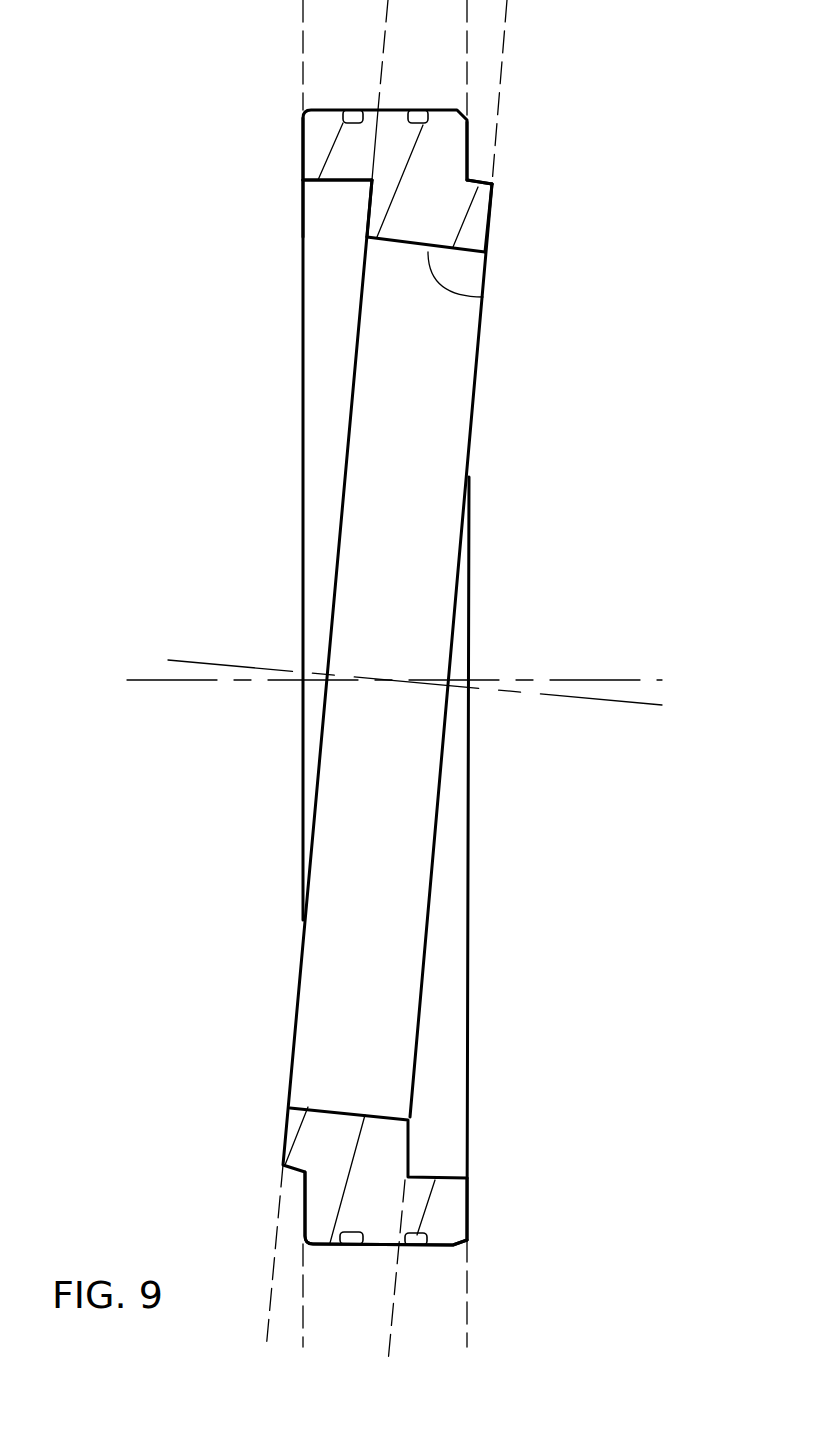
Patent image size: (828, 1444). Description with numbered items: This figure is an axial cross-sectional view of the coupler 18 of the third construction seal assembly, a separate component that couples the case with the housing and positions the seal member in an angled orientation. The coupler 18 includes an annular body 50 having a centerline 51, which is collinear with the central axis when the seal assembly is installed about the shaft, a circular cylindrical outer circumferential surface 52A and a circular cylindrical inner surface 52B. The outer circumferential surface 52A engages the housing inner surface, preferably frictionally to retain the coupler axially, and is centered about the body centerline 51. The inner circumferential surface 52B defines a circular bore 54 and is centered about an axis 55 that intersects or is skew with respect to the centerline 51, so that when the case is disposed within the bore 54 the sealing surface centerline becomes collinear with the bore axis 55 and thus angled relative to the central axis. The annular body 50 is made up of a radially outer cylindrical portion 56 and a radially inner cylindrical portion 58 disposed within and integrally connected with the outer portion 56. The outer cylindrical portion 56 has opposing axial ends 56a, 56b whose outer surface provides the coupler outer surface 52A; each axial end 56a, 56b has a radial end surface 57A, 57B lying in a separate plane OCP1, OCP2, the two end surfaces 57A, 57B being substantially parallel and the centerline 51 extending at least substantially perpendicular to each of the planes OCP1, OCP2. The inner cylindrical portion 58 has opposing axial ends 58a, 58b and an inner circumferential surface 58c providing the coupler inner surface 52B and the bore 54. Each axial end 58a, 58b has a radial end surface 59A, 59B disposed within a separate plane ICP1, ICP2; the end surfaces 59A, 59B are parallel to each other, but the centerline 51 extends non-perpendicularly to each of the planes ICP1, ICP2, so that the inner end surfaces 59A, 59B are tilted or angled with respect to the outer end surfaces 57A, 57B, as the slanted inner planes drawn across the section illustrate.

The coupler 18 is at (552, 318).
The annular body 50 is at (292, 431).
The centerline 51 is at (633, 680).
The outer circumferential surface 52A is at (358, 100).
The inner circumferential surface 52B is at (447, 404).
The bore 54 is at (422, 529).
The axis 55 is at (636, 705).
The radially outer cylindrical portion 56 is at (463, 1210).
The axial end of outer cylindrical portion 56a is at (468, 168).
The axial end of outer cylindrical portion 56b is at (303, 163).
The radial end surface 57A is at (468, 147).
The radial end surface 57B is at (303, 141).
The radially inner cylindrical portion 58 is at (408, 1141).
The axial end of inner cylindrical portion 58a is at (485, 267).
The axial end of inner cylindrical portion 58b is at (362, 258).
The inner circumferential surface of inner portion 58c is at (483, 294).
The radial end surface 59A is at (490, 225).
The radial end surface 59B is at (364, 207).
The plane OCP1 is at (468, 28).
The plane OCP2 is at (303, 15).
The plane ICP1 is at (502, 58).
The plane ICP2 is at (383, 36).